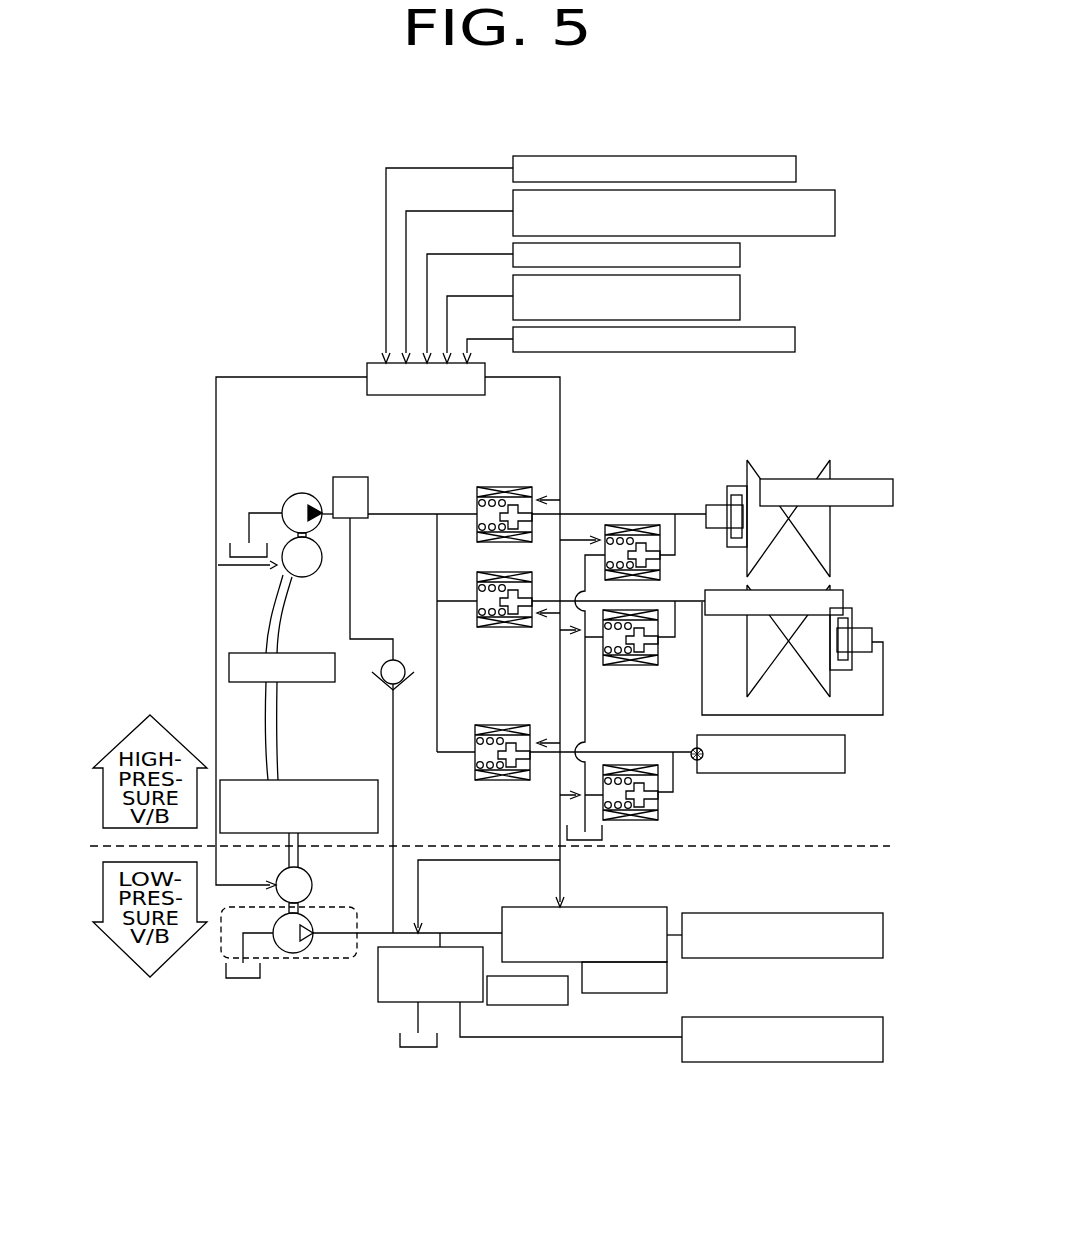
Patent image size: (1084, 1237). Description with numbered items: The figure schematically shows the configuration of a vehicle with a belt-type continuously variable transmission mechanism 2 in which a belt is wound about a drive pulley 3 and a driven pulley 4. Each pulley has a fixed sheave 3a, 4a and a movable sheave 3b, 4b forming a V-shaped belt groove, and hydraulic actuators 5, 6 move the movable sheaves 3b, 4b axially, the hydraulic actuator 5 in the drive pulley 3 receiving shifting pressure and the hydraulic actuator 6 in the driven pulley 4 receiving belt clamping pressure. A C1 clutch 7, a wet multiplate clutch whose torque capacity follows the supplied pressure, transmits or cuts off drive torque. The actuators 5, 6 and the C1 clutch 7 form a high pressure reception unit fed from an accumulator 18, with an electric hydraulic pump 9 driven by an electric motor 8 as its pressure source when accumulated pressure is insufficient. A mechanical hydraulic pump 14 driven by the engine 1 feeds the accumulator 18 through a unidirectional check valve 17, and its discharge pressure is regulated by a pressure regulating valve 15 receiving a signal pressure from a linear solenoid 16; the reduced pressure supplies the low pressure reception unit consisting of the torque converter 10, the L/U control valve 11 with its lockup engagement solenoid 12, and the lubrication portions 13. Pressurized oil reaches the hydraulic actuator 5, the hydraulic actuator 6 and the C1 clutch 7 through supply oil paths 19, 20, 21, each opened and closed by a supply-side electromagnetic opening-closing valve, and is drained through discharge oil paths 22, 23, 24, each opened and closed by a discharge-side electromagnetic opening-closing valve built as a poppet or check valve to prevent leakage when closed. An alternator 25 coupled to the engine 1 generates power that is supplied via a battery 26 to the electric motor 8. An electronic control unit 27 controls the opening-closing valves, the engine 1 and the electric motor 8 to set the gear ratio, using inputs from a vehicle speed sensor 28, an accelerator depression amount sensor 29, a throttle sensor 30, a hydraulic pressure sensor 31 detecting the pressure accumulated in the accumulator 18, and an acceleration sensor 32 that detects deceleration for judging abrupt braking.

The engine 1 is at (275, 878).
The continuously variable transmission mechanism 2 is at (799, 562).
The drive pulley 3 is at (820, 492).
The fixed sheave 3a is at (823, 475).
The movable sheave 3b is at (760, 472).
The driven pulley 4 is at (799, 633).
The fixed sheave 4a is at (775, 670).
The movable sheave 4b is at (803, 668).
The hydraulic actuator 5 is at (716, 507).
The hydraulic actuator 6 is at (860, 627).
The C1 clutch 7 is at (778, 775).
The electric motor 8 is at (320, 570).
The electric hydraulic pump 9 is at (286, 501).
The torque converter 10 is at (745, 912).
The L/U control valve 11 is at (607, 905).
The lockup engagement solenoid 12 is at (613, 993).
The lubrication portions 13 is at (753, 1017).
The mechanical hydraulic pump 14 is at (297, 955).
The pressure regulating valve 15 is at (390, 1002).
The linear solenoid 16 is at (568, 994).
The check valve 17 is at (407, 690).
The accumulator 18 is at (369, 500).
The supply oil path 19 is at (452, 514).
The supply oil path 20 is at (455, 598).
The supply oil path 21 is at (457, 750).
The discharge oil path 22 is at (675, 538).
The discharge oil path 23 is at (675, 622).
The discharge oil path 24 is at (673, 780).
The alternator 25 is at (302, 778).
The battery 26 is at (335, 668).
The electronic control unit 27 is at (370, 362).
The vehicle speed sensor 28 is at (797, 170).
The accelerator depression amount sensor 29 is at (836, 213).
The throttle sensor 30 is at (741, 255).
The hydraulic pressure sensor 31 is at (741, 297).
The acceleration sensor 32 is at (797, 340).